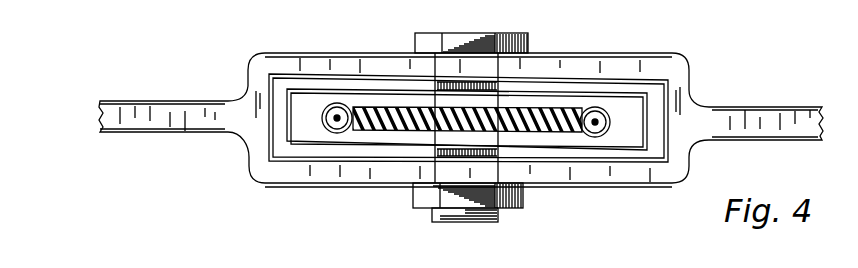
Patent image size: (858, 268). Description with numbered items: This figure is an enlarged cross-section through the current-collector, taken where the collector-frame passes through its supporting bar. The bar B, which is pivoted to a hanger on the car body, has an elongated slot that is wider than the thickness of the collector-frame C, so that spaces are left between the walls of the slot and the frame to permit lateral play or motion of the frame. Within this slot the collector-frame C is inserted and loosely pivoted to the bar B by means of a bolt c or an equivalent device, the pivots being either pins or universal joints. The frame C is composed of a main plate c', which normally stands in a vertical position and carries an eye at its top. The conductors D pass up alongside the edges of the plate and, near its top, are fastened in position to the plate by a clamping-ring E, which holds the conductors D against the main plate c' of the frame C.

The bar B is at (167, 161).
The collector-frame C is at (379, 146).
The conductors D is at (618, 133).
The clamping-ring E is at (330, 136).
The bolt c is at (470, 139).
The main plate c' is at (486, 119).